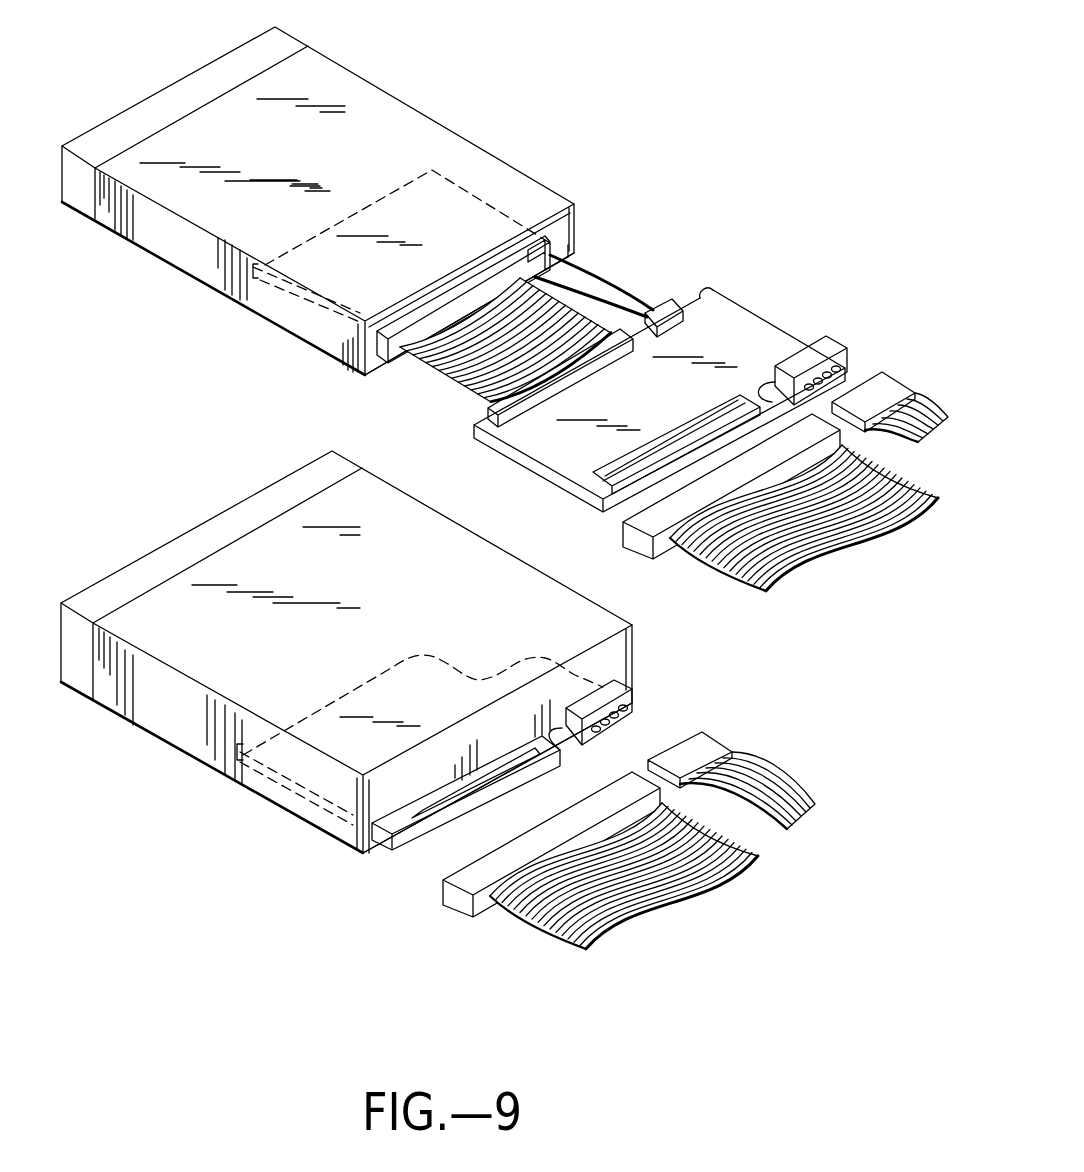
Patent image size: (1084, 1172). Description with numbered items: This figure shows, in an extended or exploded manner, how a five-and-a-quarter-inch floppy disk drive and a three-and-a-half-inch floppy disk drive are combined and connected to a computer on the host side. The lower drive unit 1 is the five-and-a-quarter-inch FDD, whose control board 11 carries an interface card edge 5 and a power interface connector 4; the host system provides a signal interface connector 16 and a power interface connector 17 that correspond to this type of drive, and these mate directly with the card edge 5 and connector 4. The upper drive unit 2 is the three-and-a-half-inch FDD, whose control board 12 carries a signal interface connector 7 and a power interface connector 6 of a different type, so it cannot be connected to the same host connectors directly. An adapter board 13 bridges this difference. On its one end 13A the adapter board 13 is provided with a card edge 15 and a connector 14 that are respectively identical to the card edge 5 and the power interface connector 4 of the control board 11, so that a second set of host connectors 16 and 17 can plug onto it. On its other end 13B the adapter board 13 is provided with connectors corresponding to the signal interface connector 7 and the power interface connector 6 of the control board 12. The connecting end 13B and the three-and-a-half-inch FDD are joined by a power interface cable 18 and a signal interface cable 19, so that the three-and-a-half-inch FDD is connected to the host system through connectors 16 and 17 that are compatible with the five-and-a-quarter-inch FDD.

The first cartridge housing 1 is at (250, 557).
The second cartridge housing 2 is at (358, 103).
The power interface connector 4 is at (617, 687).
The interface card edge 5 is at (412, 828).
The power interface connector 6 is at (575, 227).
The signal interface connector 7 is at (400, 322).
The control board 11 is at (298, 797).
The control board 12 is at (442, 207).
The adapter board 13 is at (740, 322).
The one end of adapter board 13A is at (767, 375).
The other end of adapter board 13B is at (703, 290).
The connector 14 is at (837, 338).
The card edge 15 is at (675, 440).
The signal interface connector 16 is at (625, 543).
The power interface connector 17 is at (893, 385).
The power interface cable 18 is at (637, 295).
The signal interface cable 19 is at (462, 378).